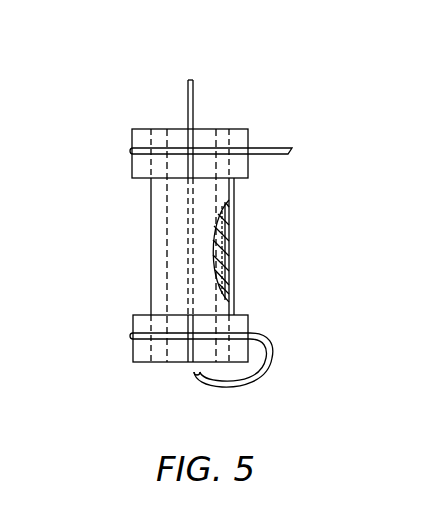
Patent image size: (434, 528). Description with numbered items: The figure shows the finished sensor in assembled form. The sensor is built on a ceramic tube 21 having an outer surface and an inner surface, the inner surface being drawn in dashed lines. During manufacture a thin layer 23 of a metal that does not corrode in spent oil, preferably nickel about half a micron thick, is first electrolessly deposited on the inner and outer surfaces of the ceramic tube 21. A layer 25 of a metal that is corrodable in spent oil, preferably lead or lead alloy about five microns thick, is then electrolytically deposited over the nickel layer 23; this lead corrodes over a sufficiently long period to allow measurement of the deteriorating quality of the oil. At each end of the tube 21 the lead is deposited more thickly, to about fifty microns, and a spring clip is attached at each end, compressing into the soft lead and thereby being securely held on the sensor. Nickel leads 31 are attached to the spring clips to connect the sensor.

The ceramic tube 21 is at (246, 279).
The thin layer of non-corrodable metal 23 is at (275, 266).
The layer of corrodable metal 25 is at (275, 225).
The lead 31 is at (193, 97).